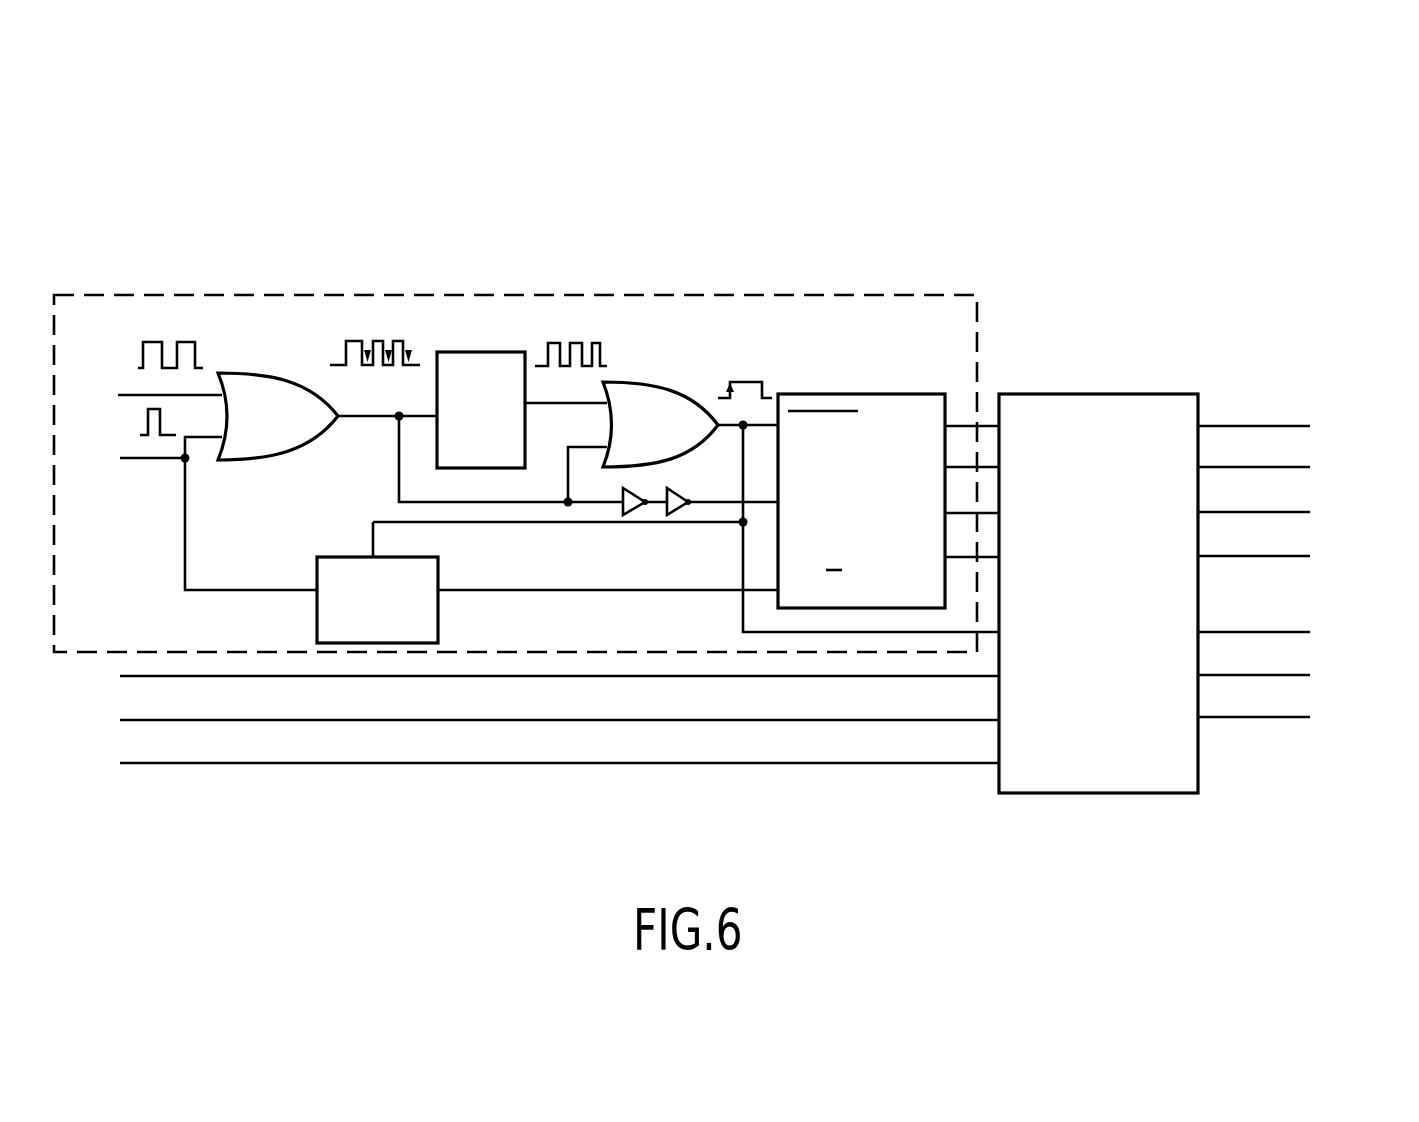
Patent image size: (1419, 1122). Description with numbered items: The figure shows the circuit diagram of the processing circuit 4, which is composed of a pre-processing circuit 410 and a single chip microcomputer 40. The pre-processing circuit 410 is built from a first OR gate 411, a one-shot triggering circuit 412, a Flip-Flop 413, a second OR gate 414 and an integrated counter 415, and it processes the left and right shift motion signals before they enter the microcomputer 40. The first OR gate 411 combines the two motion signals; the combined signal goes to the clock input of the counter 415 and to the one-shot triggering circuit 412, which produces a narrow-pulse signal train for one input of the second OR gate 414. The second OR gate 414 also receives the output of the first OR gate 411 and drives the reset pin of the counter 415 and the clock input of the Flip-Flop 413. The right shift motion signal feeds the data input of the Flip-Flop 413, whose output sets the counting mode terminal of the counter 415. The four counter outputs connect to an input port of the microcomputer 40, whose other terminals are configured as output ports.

The processing circuit 4 is at (847, 181).
The single chip microcomputer 40 is at (1095, 408).
The pre-processing circuit 410 is at (654, 312).
The first OR gate 411 is at (270, 378).
The one-shot triggering circuit 412 is at (455, 356).
The Flip-Flop 413 is at (433, 616).
The second OR gate 414 is at (645, 407).
The integrated counter 415 is at (870, 393).